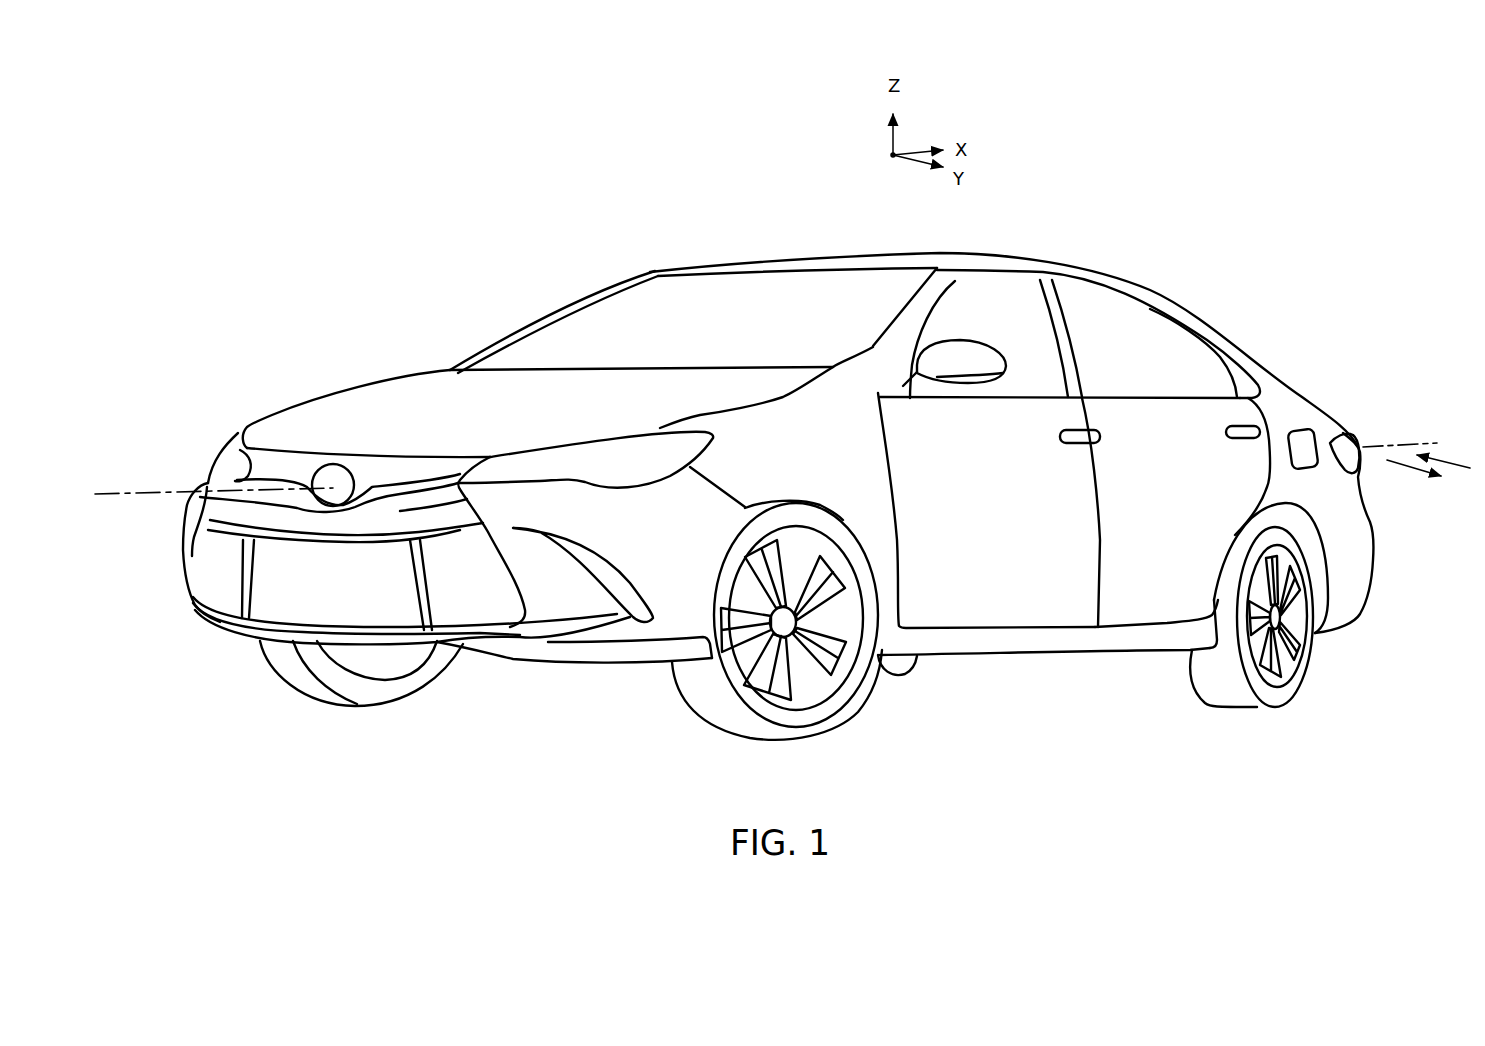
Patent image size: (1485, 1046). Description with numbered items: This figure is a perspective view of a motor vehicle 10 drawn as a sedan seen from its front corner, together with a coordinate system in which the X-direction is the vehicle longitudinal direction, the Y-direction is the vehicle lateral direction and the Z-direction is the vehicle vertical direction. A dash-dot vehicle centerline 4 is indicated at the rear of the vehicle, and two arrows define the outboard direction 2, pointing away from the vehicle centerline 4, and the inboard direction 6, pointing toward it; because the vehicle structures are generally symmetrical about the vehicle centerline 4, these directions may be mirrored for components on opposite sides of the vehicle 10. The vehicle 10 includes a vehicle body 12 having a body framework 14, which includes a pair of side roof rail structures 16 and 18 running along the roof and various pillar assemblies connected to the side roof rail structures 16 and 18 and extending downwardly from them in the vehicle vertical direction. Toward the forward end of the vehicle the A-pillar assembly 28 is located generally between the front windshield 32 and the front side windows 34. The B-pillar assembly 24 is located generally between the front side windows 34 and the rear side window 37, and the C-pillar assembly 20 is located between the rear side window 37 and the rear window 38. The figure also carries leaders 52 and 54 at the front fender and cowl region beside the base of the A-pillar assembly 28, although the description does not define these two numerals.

The vehicle 10 is at (748, 586).
The vehicle body 12 is at (1149, 291).
The body framework 14 is at (1000, 653).
The side roof rail structure 16 is at (762, 238).
The side roof rail structure 18 is at (1002, 251).
The C-pillar assembly 20 is at (1207, 327).
The B-pillar assembly 24 is at (1085, 352).
The A-pillar assembly 28 is at (907, 310).
The front windshield 32 is at (664, 283).
The front side window 34 is at (1015, 386).
The rear side window 37 is at (1197, 388).
The rear window 38 is at (1302, 358).
The front fender 52 is at (773, 420).
The cowl 54 is at (875, 350).
The direction 2 is at (1413, 473).
The vehicle centerline 4 is at (1385, 440).
The direction 6 is at (1443, 458).